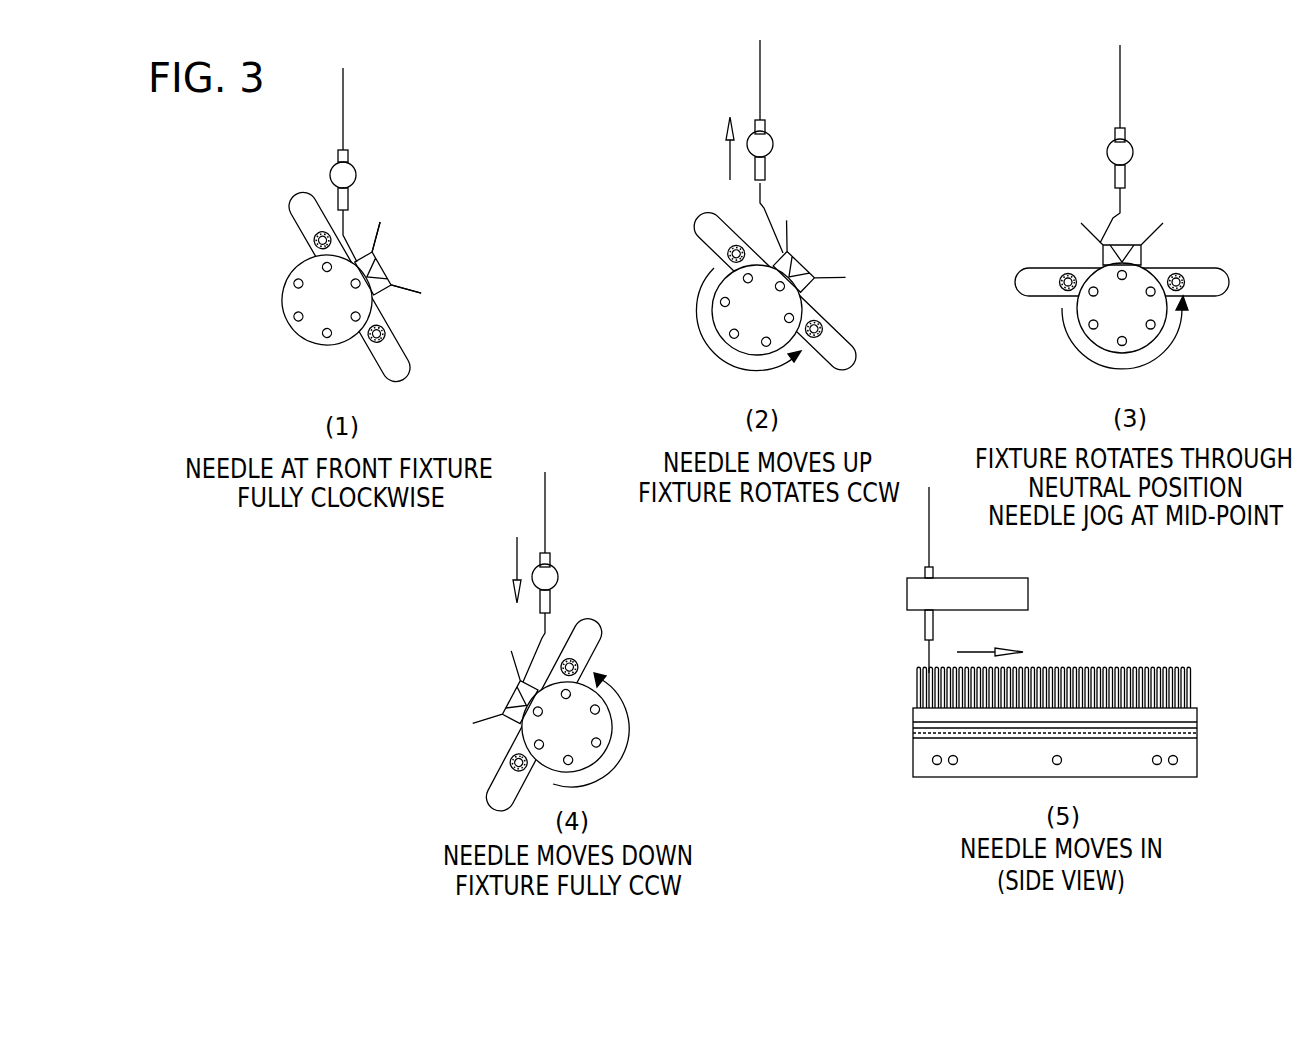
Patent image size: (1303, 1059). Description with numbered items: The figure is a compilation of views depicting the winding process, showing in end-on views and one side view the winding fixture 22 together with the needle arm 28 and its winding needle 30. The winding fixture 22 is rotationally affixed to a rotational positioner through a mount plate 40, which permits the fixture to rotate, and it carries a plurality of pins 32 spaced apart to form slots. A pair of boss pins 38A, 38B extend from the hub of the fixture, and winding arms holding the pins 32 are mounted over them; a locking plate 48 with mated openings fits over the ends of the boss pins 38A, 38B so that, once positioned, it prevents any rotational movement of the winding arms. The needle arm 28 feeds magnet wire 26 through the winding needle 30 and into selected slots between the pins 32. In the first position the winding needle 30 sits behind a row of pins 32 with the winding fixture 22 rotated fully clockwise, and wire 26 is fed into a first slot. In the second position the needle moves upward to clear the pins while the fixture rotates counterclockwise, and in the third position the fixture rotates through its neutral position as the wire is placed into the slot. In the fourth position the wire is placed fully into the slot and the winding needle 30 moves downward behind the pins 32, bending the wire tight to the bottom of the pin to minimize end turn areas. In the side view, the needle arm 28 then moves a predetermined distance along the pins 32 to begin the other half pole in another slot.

The winding fixture 22 is at (404, 246).
The magnet wire 26 is at (343, 97).
The needle arm 28 is at (348, 172).
The winding needle 30 is at (339, 184).
The pins 32 is at (381, 226).
The boss pin 38A is at (393, 342).
The boss pin 38B is at (312, 240).
The mount plate 40 is at (310, 327).
The locking plate 48 is at (296, 203).